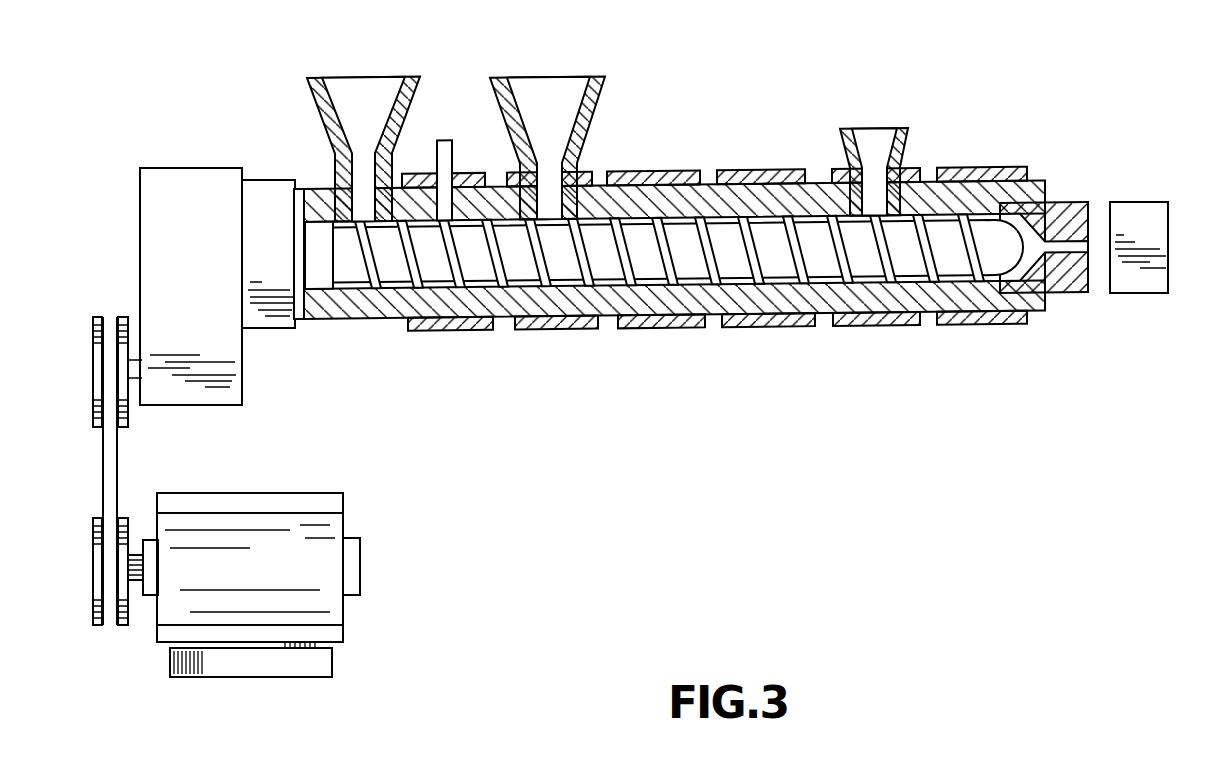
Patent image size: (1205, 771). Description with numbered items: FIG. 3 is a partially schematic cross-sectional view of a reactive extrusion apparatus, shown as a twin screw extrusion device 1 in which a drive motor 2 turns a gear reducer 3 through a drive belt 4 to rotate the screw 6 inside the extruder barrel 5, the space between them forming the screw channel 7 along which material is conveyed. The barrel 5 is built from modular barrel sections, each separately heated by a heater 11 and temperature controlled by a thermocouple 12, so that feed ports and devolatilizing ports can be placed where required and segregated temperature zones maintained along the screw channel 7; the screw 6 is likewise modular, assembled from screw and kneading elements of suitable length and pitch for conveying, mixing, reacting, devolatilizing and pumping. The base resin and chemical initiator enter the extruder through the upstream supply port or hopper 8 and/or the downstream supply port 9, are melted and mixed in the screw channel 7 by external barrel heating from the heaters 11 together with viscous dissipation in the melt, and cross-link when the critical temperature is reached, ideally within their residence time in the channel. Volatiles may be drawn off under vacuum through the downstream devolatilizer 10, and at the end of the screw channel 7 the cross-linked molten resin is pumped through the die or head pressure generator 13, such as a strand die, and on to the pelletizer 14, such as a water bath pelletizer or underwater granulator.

The twin screw extrusion device 1 is at (672, 201).
The drive motor 2 is at (270, 521).
The gear reducer 3 is at (176, 181).
The drive belt 4 is at (103, 445).
The extruder barrel 5 is at (385, 310).
The screw 6 is at (647, 297).
The screw channel 7 is at (873, 273).
The upstream supply port or hopper 8 is at (307, 100).
The downstream supply port 9 is at (603, 104).
The downstream devolatilizer 10 is at (870, 120).
The heater 11 is at (965, 172).
The thermocouple 12 is at (446, 138).
The die or head pressure generator 13 is at (1066, 297).
The pelletizer 14 is at (1140, 295).